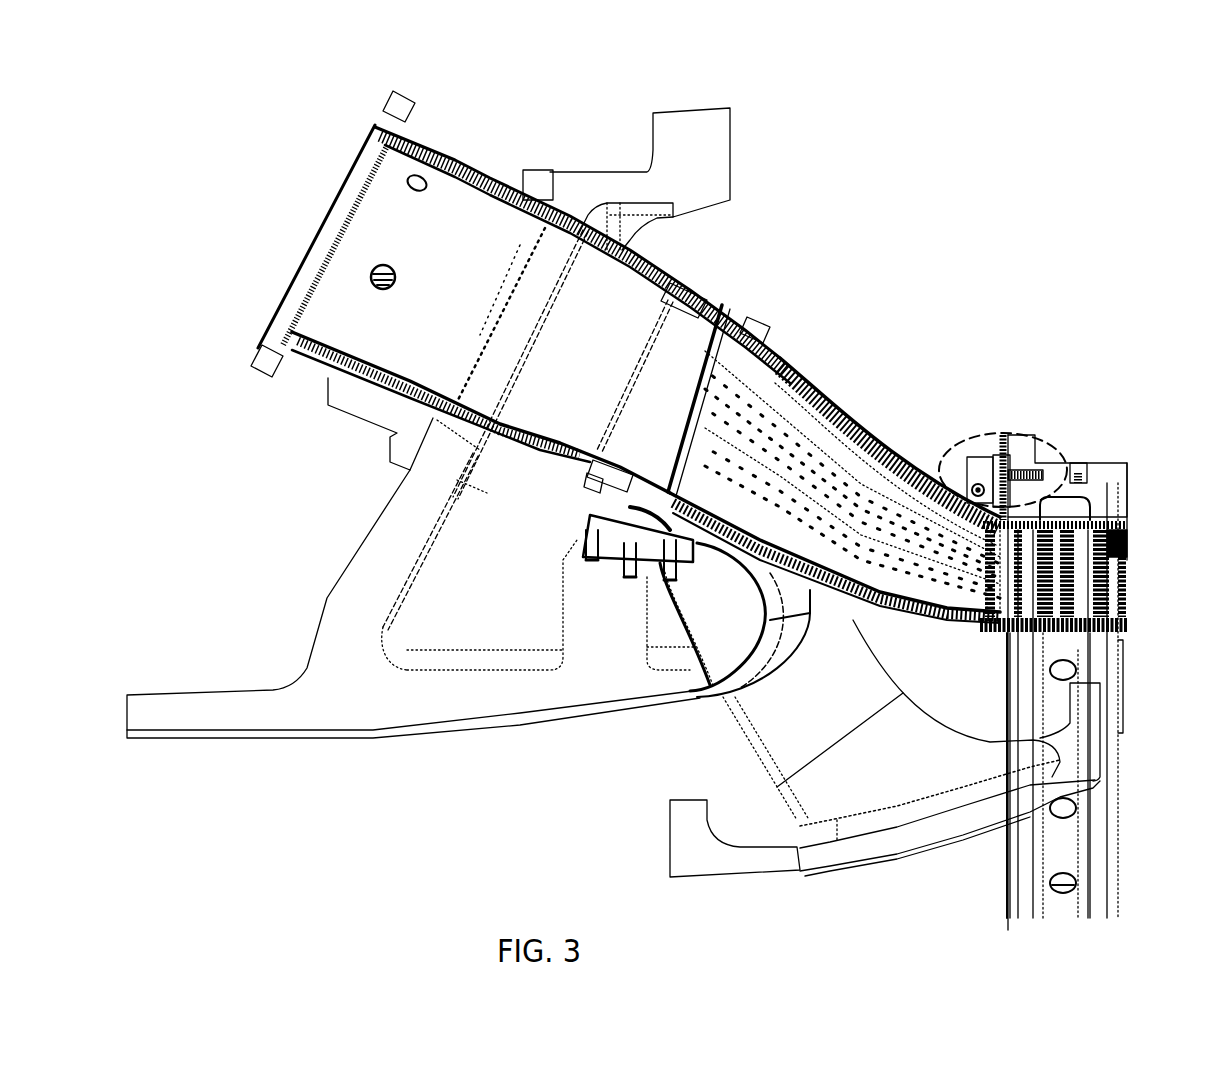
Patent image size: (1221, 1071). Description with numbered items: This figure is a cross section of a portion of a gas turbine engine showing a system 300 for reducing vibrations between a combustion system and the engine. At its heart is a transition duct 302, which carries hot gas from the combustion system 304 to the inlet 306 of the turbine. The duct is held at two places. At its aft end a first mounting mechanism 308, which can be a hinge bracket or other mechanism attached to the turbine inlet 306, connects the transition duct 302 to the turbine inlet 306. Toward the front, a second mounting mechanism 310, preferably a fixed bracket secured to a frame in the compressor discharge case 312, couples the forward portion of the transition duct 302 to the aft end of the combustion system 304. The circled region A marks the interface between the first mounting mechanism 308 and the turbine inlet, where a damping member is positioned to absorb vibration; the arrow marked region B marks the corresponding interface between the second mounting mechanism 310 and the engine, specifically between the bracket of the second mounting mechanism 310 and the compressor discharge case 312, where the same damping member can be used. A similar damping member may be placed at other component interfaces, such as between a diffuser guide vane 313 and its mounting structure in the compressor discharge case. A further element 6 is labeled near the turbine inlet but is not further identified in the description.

The system 300 is at (946, 268).
The transition duct 302 is at (812, 395).
The combustion system 304 is at (633, 277).
The inlet of a turbine 306 is at (1052, 473).
The first mounting mechanism 308 is at (975, 473).
The second mounting mechanism 310 is at (620, 513).
The compressor discharge case 312 is at (597, 592).
The diffuser guide vane 313 is at (712, 622).
The casing wall 6 is at (1050, 447).
The region A is at (998, 443).
The region B is at (557, 543).